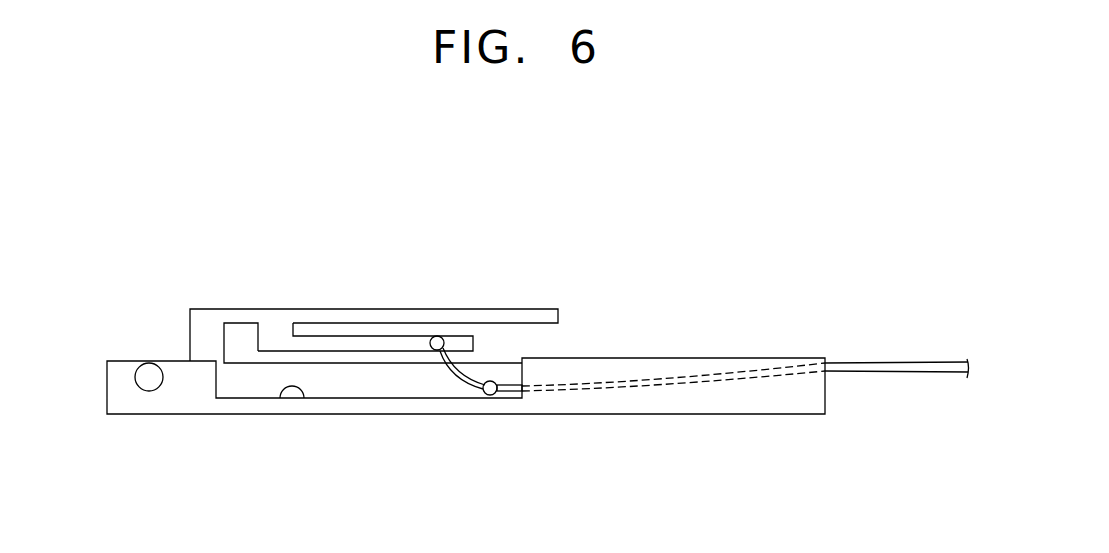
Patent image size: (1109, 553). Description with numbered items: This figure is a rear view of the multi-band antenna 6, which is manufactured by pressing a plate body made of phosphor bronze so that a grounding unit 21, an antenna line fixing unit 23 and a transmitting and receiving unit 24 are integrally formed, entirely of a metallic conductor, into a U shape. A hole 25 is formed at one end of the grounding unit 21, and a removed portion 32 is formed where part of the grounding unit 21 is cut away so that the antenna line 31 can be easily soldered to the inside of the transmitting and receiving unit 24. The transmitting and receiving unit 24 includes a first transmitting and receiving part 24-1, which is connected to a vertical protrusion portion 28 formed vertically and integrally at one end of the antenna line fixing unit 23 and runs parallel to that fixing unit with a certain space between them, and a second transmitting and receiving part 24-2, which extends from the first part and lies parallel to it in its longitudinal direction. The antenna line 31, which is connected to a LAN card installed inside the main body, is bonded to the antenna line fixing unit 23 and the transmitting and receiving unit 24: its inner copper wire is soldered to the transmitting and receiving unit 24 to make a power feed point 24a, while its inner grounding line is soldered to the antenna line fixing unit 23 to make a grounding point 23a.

The multi-band antenna 6 is at (160, 323).
The grounding unit 21 is at (683, 402).
The antenna line fixing unit 23 is at (467, 370).
The grounding point 23a is at (489, 395).
The transmitting and receiving unit 24 is at (373, 251).
The first transmitting and receiving part 24-1 is at (340, 317).
The second transmitting and receiving part 24-2 is at (402, 343).
The power feed point 24a is at (436, 350).
The hole 25 is at (150, 389).
The vertical protrusion portion 28 is at (212, 333).
The antenna line 31 is at (868, 372).
The removed portion 32 is at (280, 398).